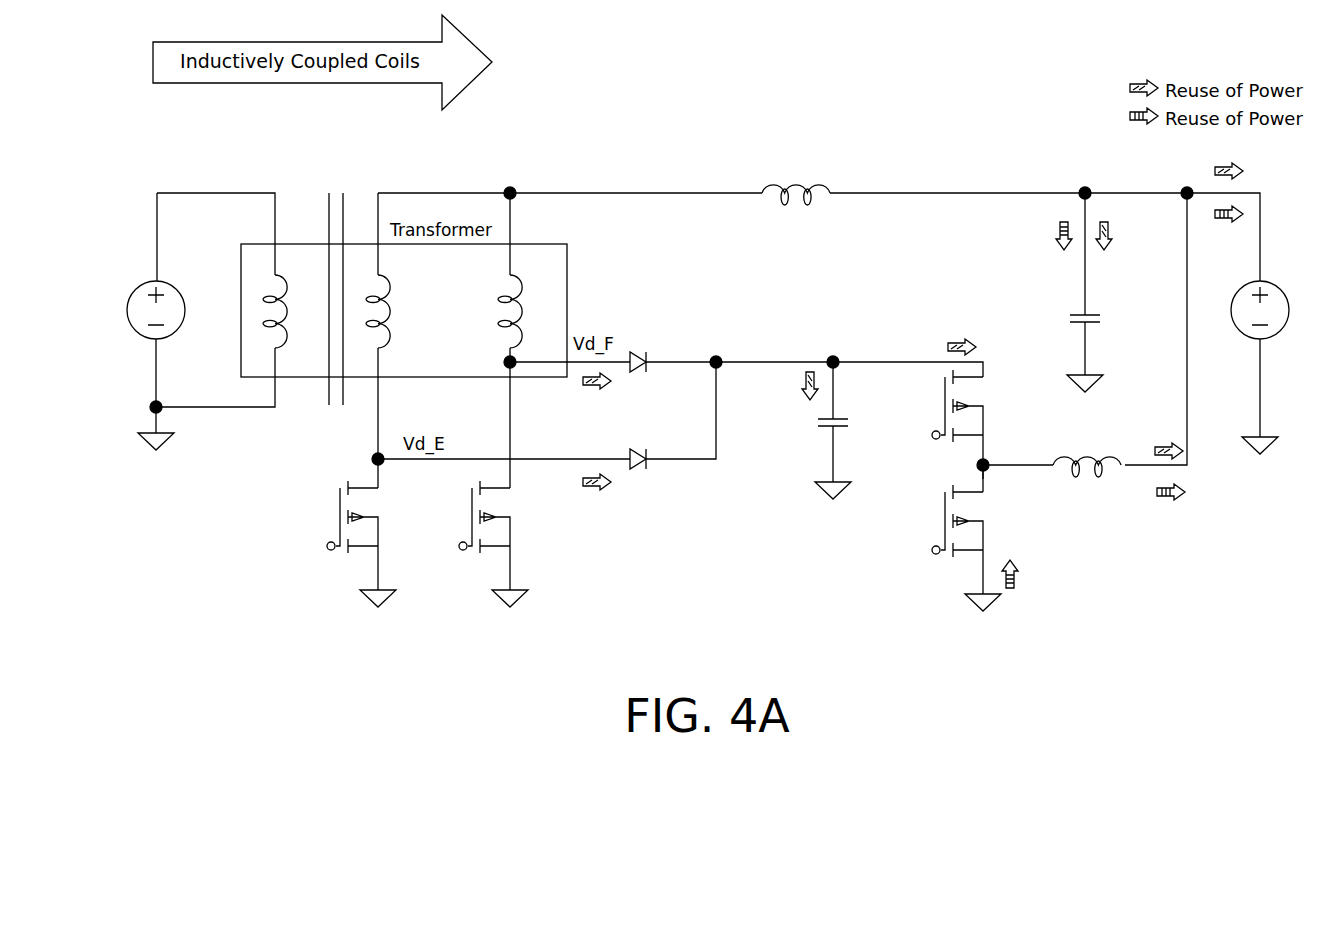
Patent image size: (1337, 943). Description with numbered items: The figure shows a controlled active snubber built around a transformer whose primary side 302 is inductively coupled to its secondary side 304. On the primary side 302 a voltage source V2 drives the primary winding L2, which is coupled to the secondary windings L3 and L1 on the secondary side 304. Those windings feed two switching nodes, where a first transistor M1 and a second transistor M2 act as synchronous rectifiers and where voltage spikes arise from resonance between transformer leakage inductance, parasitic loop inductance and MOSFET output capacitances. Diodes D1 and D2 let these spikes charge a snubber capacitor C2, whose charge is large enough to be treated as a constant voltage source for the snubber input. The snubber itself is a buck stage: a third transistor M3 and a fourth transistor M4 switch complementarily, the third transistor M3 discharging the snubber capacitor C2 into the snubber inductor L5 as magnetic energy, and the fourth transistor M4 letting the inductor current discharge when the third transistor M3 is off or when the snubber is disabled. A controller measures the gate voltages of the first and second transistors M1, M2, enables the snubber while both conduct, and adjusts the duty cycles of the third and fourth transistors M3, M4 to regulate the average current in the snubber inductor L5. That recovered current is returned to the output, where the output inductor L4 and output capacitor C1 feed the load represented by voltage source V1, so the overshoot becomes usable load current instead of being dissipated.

The primary side of transformer 302 is at (255, 193).
The secondary side of transformer 304 is at (488, 193).
The secondary winding L1 is at (524, 311).
The primary winding L2 is at (290, 311).
The secondary winding L3 is at (391, 311).
The output inductor Lout L4 is at (796, 197).
The snubber inductor L5 is at (1082, 469).
The output capacitor Cout C1 is at (1101, 292).
The snubber capacitor Csnub C2 is at (855, 430).
The diode D1 is at (642, 446).
The diode D2 is at (642, 348).
The first transistor M1 is at (351, 544).
The second transistor M2 is at (551, 544).
The third transistor M3 is at (986, 424).
The fourth transistor M4 is at (986, 548).
The voltage source V1 is at (1268, 360).
The voltage source V2 is at (162, 315).